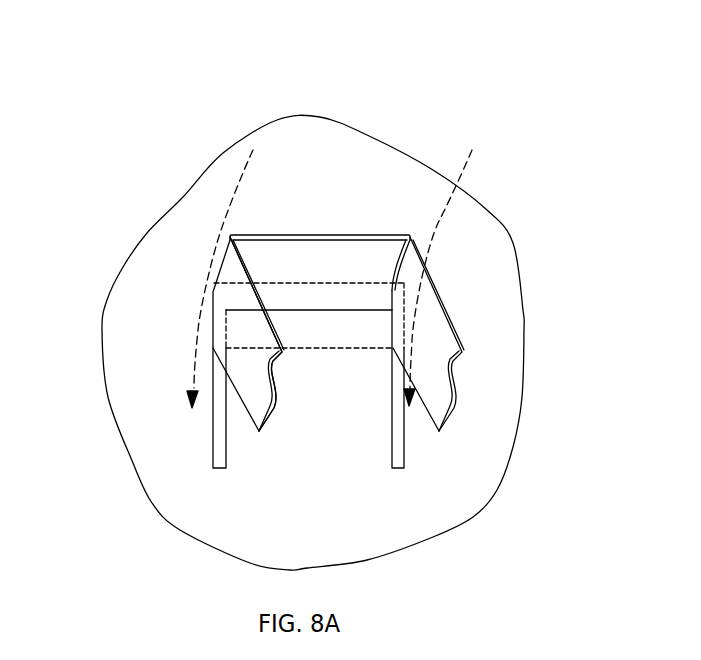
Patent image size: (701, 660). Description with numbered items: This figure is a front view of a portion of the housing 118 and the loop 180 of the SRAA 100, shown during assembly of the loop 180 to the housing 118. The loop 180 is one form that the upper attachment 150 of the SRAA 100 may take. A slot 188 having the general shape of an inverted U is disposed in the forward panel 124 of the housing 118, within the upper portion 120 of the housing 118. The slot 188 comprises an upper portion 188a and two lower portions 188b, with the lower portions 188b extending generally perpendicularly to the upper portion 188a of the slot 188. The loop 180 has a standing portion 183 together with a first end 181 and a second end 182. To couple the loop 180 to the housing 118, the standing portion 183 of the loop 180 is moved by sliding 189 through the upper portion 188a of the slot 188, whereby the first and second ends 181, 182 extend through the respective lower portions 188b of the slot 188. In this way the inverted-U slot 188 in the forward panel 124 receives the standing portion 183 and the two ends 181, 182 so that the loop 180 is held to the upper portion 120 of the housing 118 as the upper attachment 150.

The SRAA 100 is at (152, 118).
The upper attachment 150 is at (219, 115).
The housing 118 is at (140, 387).
The upper portion 120 is at (162, 457).
The forward panel 124 is at (170, 321).
The loop 180 is at (316, 328).
The first end 181 is at (180, 500).
The second end 182 is at (537, 407).
The standing portion 183 is at (313, 235).
The slot 188 is at (351, 363).
The upper portion 188a is at (213, 291).
The lower portions 188b is at (227, 452).
The sliding 189 is at (249, 165).